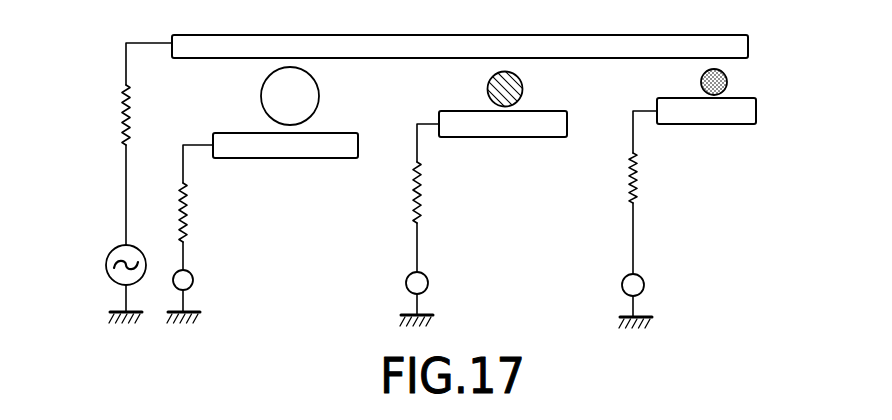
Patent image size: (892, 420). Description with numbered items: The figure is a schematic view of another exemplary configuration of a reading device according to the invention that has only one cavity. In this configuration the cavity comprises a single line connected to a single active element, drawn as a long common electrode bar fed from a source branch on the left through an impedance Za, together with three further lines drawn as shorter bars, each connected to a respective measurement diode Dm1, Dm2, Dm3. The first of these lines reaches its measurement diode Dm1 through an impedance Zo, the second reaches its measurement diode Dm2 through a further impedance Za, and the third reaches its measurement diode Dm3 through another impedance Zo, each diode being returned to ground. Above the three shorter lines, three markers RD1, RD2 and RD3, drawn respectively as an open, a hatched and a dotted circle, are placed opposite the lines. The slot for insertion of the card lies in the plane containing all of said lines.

The first photodetector/readout element (open) RD1 is at (314, 96).
The second readout element (hatched) RD2 is at (520, 89).
The third readout element (dotted) RD3 is at (737, 82).
The measurement diode Dm1 is at (262, 228).
The measurement diode Dm2 is at (483, 218).
The measurement diode Dm3 is at (687, 213).
The impedance Za is at (277, 154).
The impedance Zo is at (423, 197).